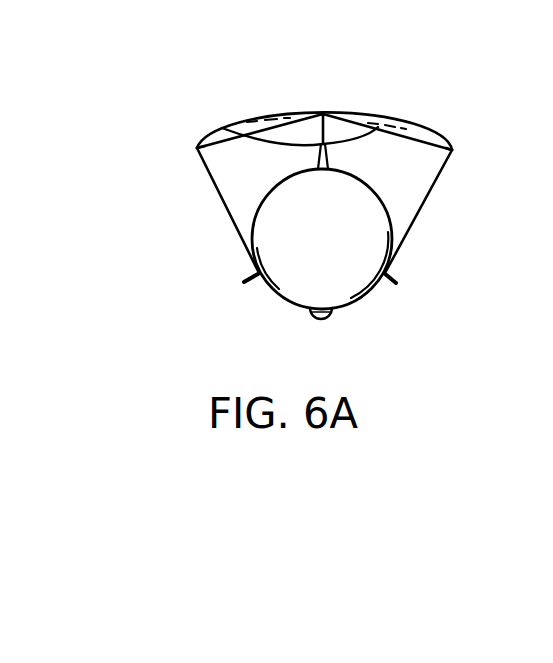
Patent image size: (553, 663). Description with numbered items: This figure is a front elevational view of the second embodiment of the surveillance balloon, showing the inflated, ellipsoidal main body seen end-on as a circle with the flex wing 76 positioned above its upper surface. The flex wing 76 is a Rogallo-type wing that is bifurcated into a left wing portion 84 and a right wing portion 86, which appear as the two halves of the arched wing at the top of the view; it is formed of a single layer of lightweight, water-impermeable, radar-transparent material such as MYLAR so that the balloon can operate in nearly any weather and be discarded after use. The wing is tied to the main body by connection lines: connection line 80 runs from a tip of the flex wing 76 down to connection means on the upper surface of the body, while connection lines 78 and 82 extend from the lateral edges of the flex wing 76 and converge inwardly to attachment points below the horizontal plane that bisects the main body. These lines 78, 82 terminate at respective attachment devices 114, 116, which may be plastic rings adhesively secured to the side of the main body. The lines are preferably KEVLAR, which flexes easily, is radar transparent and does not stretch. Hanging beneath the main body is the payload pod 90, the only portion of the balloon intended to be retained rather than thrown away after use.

The flex wing 76 is at (381, 114).
The connection line 78 is at (226, 216).
The connection line 80 is at (328, 115).
The connection line 82 is at (419, 213).
The left wing portion 84 is at (487, 128).
The right wing portion 86 is at (226, 127).
The payload pod 90 is at (337, 314).
The attachment device 114 is at (250, 278).
The attachment device 116 is at (391, 274).